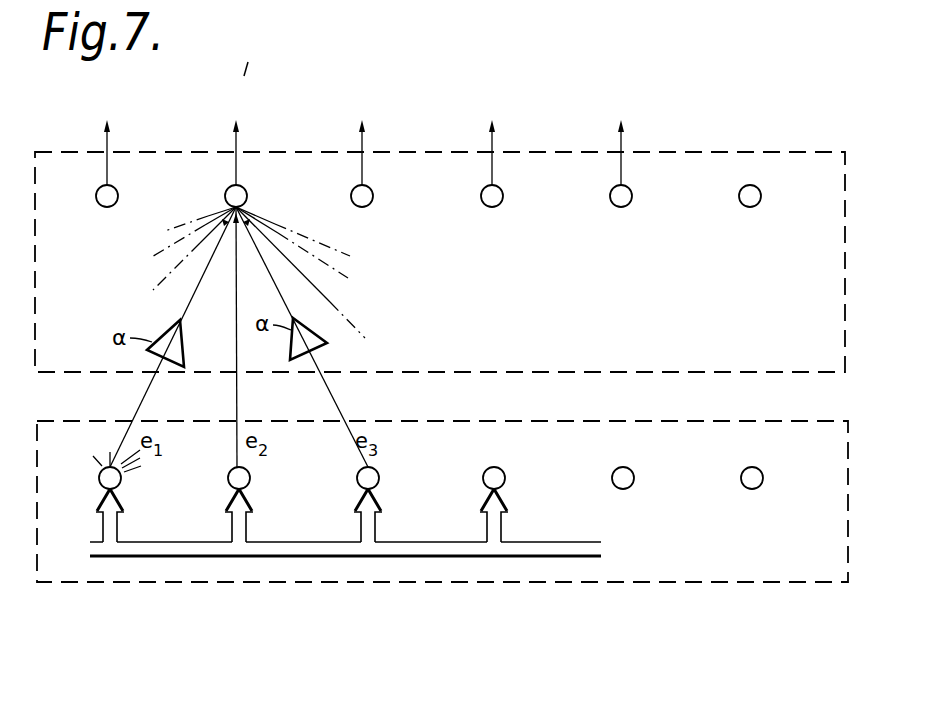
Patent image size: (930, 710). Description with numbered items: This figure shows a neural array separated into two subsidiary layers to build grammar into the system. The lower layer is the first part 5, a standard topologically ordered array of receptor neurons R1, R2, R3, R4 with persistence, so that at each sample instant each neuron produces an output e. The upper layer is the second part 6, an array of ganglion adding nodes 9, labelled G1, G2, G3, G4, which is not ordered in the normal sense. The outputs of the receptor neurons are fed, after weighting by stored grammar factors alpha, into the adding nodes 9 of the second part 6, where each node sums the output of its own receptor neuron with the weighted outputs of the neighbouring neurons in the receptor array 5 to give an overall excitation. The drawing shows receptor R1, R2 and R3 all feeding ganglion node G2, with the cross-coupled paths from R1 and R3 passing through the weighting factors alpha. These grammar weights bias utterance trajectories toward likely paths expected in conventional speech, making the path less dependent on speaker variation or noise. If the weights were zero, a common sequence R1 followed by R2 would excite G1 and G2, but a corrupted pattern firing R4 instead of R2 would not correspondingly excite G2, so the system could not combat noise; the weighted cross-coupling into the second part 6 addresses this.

The first part 5 is at (493, 598).
The second part 6 is at (690, 140).
The adding node 9 is at (492, 207).
The ganglion node G1 is at (99, 206).
The ganglion node G2 is at (247, 194).
The ganglion node G3 is at (373, 197).
The ganglion node G4 is at (503, 193).
The receptor neuron R1 is at (122, 481).
The receptor neuron R2 is at (250, 481).
The receptor neuron R3 is at (379, 481).
The receptor neuron R4 is at (505, 481).